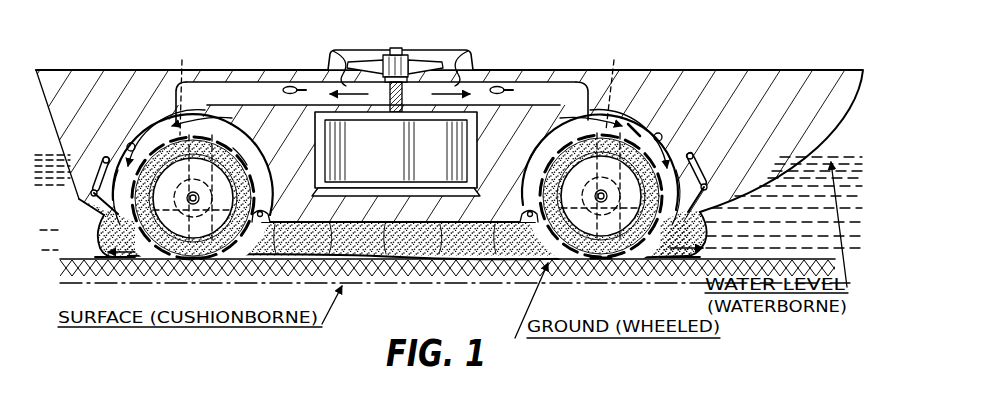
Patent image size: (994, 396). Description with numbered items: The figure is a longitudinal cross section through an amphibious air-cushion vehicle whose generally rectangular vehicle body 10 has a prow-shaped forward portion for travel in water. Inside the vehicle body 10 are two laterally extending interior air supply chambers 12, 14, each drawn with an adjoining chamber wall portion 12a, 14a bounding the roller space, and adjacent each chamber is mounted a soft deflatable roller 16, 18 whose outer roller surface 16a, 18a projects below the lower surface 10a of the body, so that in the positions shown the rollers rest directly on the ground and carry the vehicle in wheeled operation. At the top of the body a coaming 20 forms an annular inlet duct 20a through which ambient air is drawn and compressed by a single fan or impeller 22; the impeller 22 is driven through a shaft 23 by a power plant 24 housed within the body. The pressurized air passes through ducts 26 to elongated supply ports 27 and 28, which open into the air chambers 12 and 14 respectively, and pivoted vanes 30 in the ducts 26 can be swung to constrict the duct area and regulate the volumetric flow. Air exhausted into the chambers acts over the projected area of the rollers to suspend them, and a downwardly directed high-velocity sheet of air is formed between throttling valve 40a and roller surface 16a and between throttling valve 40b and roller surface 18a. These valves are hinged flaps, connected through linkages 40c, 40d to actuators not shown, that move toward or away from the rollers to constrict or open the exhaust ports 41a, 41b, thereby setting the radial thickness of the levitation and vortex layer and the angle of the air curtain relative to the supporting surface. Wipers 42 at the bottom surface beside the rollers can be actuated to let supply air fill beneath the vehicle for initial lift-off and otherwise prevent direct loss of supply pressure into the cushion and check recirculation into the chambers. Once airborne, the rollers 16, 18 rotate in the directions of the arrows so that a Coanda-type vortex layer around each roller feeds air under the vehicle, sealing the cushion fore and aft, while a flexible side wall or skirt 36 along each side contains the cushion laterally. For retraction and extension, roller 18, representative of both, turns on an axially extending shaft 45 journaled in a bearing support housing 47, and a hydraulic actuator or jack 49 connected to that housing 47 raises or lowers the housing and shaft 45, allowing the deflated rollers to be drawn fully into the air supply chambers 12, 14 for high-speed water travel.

The vehicle body 10 is at (782, 88).
The lower surface 10a is at (472, 223).
The interior air supply chamber 12 is at (626, 118).
The rear fender lip 12a is at (662, 136).
The interior air supply chamber 14 is at (152, 140).
The front fender lip 14a is at (133, 146).
The soft deflatable roller 16 is at (548, 183).
The roller surface 16a is at (634, 131).
The soft deflatable roller 18 is at (246, 171).
The roller surface 18a is at (252, 194).
The coaming 20 is at (455, 51).
The annular inlet duct 20a is at (457, 51).
The fan or impeller 22 is at (365, 64).
The shaft 23 is at (402, 116).
The power plant 24 is at (448, 163).
The ducts 26 is at (240, 92).
The elongated supply port 27 is at (593, 110).
The elongated supply port 28 is at (193, 100).
The pivoted vanes 30 is at (289, 85).
The flexible side wall or skirt 36 is at (428, 247).
The throttling valve 40a is at (685, 217).
The throttling valve 40b is at (122, 230).
The linkage 40c is at (700, 172).
The linkage 40d is at (102, 211).
The exhaust port 41a is at (660, 252).
The exhaust port 41b is at (114, 258).
The wipers 42 is at (262, 223).
The axially extending shaft 45 is at (193, 259).
The bearing support housing 47 is at (238, 148).
The hydraulic actuator or jack 49 is at (398, 84).